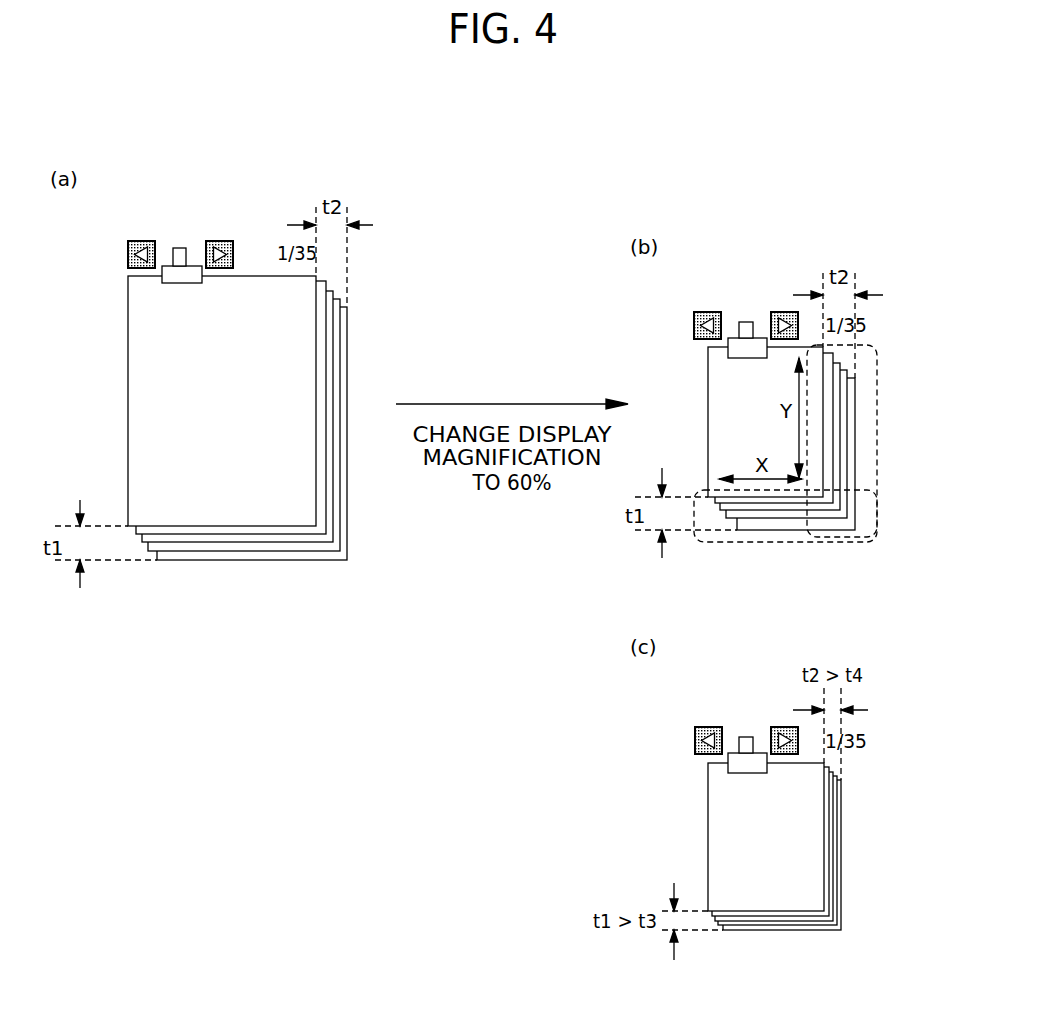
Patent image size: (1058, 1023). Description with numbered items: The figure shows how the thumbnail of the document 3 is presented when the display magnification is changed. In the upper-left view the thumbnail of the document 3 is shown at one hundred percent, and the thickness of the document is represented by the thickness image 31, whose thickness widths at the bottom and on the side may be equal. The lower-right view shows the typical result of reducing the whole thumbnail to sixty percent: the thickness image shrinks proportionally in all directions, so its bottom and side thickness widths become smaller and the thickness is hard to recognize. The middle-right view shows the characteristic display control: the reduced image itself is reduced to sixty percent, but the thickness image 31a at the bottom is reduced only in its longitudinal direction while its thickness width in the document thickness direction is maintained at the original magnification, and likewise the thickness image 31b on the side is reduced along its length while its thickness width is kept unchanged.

The document 3 is at (228, 436).
The thickness image 31 is at (829, 445).
The thickness image at the bottom of the reduced image 31a is at (850, 542).
The thickness image on the side of the reduced image 31b is at (877, 490).